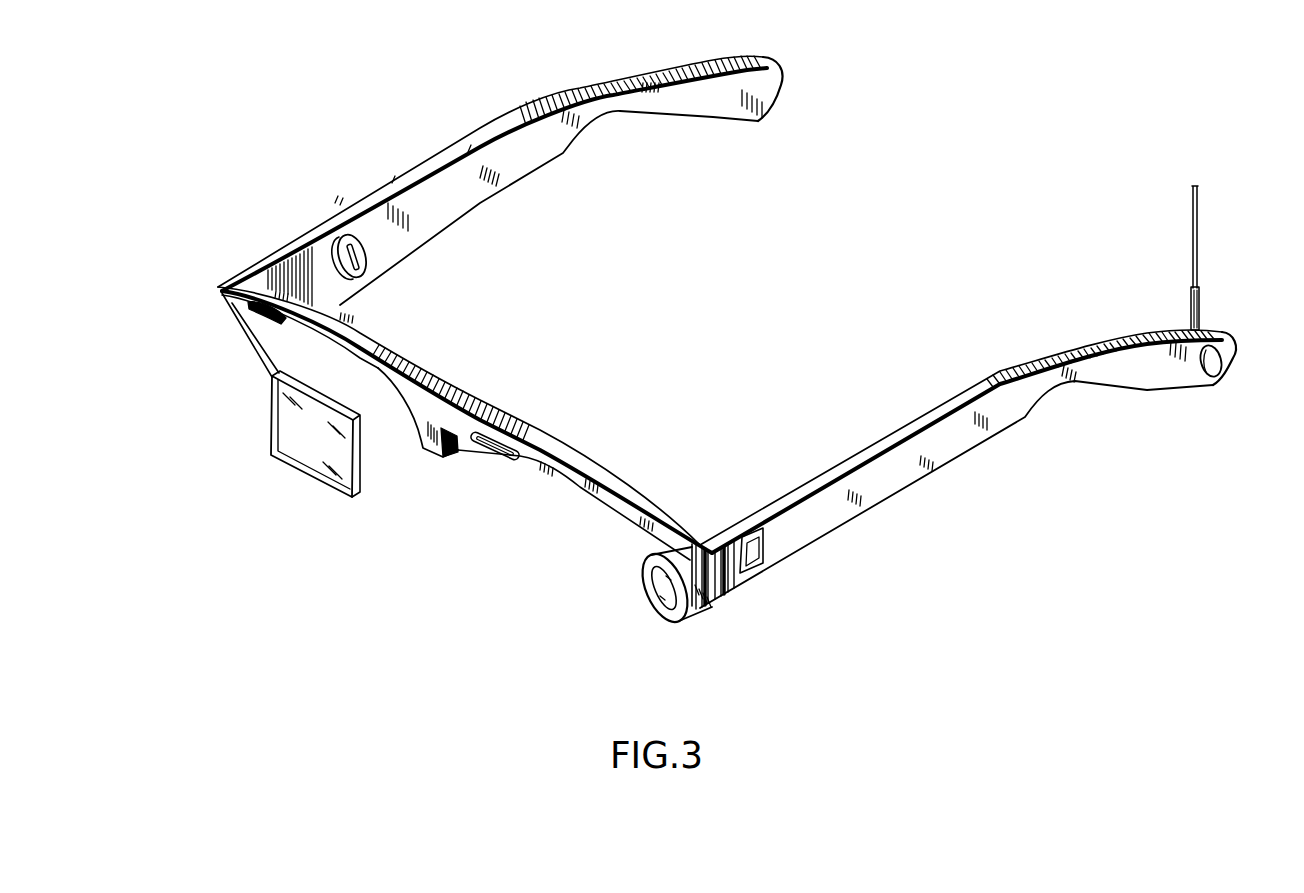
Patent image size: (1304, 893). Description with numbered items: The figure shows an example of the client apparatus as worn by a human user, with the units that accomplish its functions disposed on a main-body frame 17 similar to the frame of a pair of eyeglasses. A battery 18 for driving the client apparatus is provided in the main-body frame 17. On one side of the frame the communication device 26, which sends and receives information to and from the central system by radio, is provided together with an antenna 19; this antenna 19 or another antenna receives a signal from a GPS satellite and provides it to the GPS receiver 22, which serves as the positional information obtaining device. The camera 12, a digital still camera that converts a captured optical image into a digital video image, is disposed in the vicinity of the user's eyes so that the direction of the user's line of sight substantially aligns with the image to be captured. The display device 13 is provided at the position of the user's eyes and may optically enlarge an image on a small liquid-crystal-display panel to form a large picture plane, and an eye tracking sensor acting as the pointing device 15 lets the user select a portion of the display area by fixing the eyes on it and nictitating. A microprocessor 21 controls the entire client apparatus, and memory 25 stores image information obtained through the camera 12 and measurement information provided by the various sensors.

The camera 12 is at (650, 601).
The display device 13 is at (240, 441).
The pointing device 15 is at (483, 502).
The main-body frame 17 is at (543, 98).
The battery 18 is at (362, 234).
The antenna 19 is at (1164, 227).
The microprocessor 21 is at (770, 530).
The GPS receiver 22 is at (1250, 410).
The memory 25 is at (724, 547).
The communication device 26 is at (1172, 312).